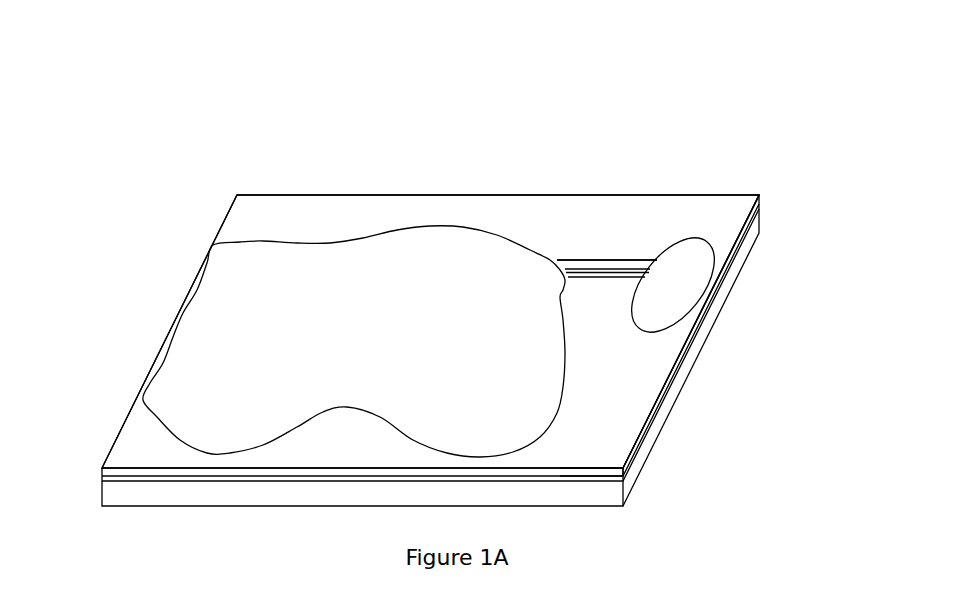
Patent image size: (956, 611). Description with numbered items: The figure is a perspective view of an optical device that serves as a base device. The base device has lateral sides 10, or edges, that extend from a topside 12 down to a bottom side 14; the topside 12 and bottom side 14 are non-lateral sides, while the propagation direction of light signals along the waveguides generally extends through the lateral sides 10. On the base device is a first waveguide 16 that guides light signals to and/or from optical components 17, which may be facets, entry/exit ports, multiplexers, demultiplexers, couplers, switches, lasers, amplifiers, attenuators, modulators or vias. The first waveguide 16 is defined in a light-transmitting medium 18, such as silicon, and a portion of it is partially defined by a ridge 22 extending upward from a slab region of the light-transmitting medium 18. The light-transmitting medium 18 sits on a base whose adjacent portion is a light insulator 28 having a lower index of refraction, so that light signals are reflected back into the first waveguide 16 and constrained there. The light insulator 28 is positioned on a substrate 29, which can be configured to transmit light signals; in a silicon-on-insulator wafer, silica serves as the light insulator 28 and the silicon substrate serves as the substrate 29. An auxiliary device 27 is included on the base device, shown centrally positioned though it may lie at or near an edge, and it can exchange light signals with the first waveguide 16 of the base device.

The lateral sides 10 is at (93, 467).
The topside 12 is at (282, 210).
The bottom side 14 is at (240, 506).
The first waveguide 16 is at (592, 248).
The optical components 17 is at (328, 413).
The light-transmitting medium 18 is at (580, 472).
The ridge 22 is at (616, 260).
The auxiliary device 27 is at (635, 323).
The light insulator 28 is at (320, 483).
The substrate 29 is at (637, 467).